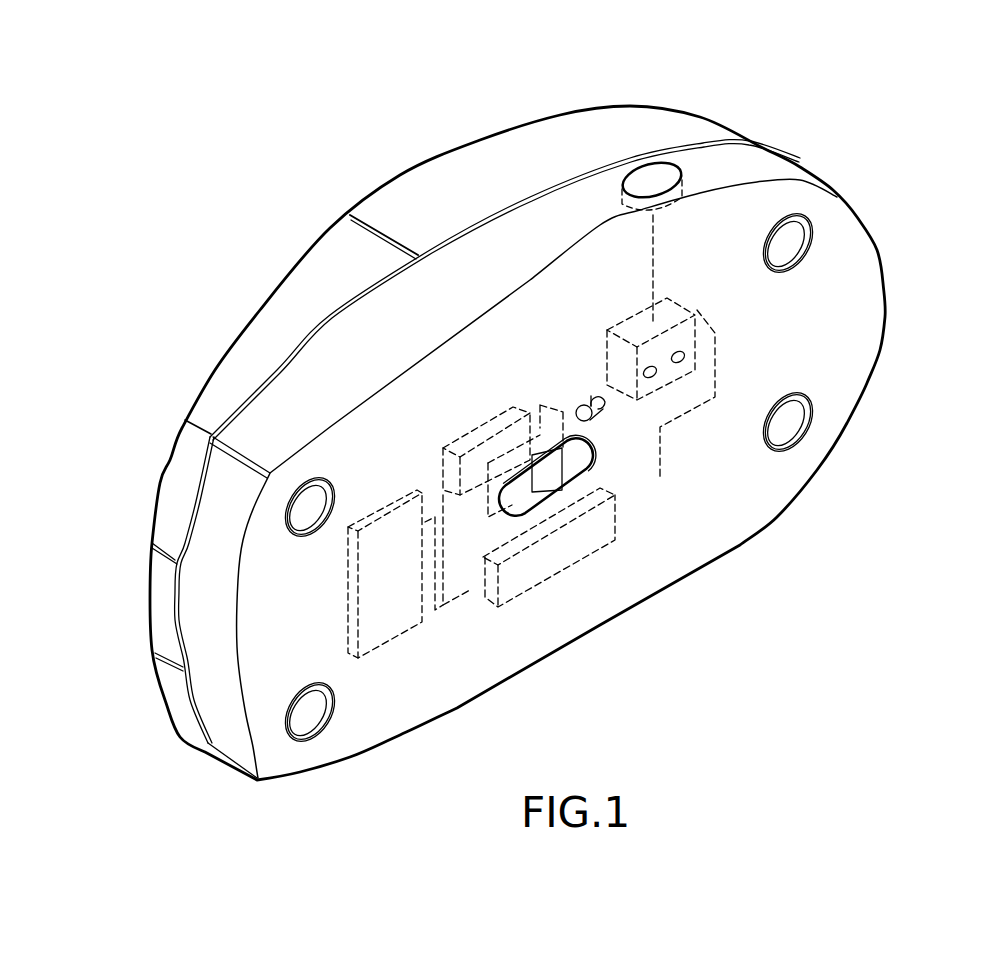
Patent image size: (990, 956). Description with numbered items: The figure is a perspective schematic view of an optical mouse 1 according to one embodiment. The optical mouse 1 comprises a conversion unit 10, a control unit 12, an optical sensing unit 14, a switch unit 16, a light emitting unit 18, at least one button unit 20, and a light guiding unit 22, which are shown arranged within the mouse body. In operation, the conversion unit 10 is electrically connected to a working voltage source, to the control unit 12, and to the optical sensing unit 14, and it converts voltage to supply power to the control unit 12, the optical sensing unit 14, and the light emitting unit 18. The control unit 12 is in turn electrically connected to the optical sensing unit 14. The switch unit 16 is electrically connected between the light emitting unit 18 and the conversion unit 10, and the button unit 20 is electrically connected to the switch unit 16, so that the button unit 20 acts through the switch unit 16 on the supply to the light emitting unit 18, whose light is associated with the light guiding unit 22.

The optical mouse 1 is at (174, 77).
The conversion unit 10 is at (550, 572).
The control unit 12 is at (392, 597).
The optical sensing unit 14 is at (490, 425).
The switch unit 16 is at (687, 347).
The light emitting unit 18 is at (602, 408).
The button unit 20 is at (657, 173).
The light guiding unit 22 is at (517, 493).